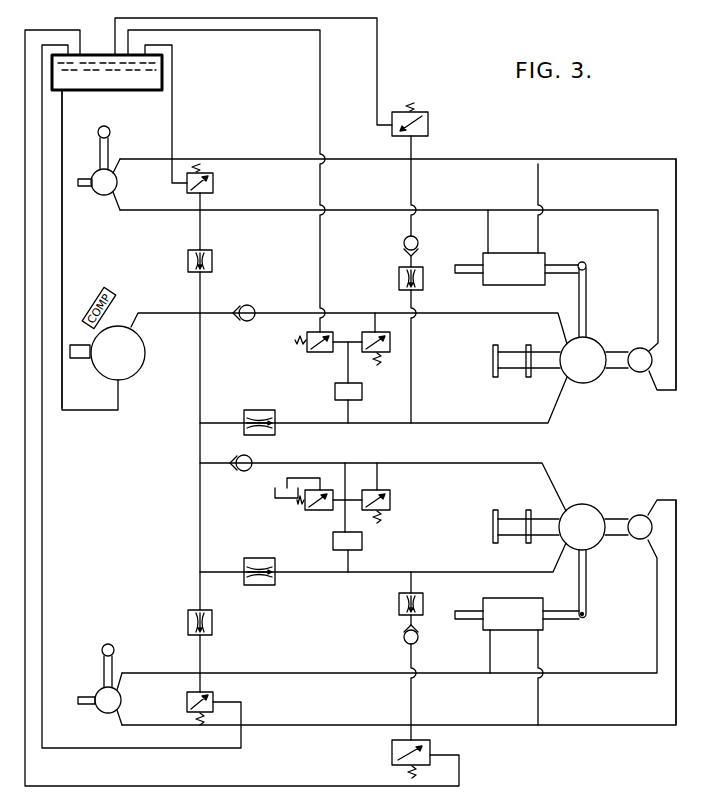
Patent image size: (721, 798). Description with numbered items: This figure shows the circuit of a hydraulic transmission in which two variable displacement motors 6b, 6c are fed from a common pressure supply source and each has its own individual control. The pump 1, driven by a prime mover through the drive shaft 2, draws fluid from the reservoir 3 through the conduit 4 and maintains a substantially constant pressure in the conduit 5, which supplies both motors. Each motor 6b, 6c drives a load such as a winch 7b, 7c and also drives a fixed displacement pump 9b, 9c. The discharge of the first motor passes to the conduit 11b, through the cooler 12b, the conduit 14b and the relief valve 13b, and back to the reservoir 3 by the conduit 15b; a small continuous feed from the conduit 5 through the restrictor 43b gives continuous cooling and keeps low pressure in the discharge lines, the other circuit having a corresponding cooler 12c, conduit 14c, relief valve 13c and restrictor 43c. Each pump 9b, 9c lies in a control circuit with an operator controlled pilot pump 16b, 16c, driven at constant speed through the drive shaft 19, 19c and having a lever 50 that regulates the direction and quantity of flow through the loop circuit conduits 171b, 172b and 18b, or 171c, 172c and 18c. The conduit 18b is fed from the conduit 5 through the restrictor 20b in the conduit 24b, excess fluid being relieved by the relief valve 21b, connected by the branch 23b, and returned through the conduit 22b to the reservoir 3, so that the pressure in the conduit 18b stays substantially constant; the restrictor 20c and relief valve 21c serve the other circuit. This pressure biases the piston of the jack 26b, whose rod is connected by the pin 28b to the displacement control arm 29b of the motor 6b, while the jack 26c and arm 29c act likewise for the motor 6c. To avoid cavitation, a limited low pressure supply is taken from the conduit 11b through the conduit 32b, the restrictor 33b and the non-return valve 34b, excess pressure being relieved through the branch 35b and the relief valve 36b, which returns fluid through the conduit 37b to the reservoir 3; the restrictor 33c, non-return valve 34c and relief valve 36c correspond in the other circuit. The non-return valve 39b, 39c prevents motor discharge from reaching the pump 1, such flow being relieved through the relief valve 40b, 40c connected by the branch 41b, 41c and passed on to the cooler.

The pump 1 is at (137, 369).
The drive shaft 2 is at (82, 360).
The reservoir 3 is at (145, 80).
The conduit 4 is at (62, 281).
The conduit 5 is at (176, 312).
The variable displacement motor 6b is at (588, 384).
The variable displacement motor 6c is at (590, 505).
The winch 7b is at (522, 365).
The winch 7c is at (517, 530).
The pump 9b is at (641, 373).
The pump 9c is at (643, 515).
The conduit 11b is at (557, 415).
The cooler 12b is at (362, 395).
The cooler 12c is at (362, 545).
The relief valve 13b is at (323, 336).
The relief valve 13c is at (325, 498).
The conduit 14b is at (338, 340).
The conduit 14c is at (345, 497).
The conduit 15b is at (318, 127).
The variable flow control device 16b is at (117, 183).
The variable flow control device 16c is at (121, 700).
The loop circuit conduit 171b is at (507, 160).
The loop circuit conduit 172b is at (625, 150).
The loop circuit conduit 171c is at (488, 712).
The loop circuit conduit 172c is at (627, 726).
The conduit 18b is at (633, 200).
The conduit 18c is at (600, 676).
The drive shaft 19 is at (84, 190).
The drive shaft 19c is at (86, 707).
The restrictor 20b is at (213, 267).
The restrictor 20c is at (213, 630).
The relief valve 21b is at (214, 180).
The relief valve 21c is at (214, 696).
The conduit 22b is at (174, 121).
The branch 23b is at (204, 206).
The conduit 24b is at (204, 238).
The jack 26b is at (540, 258).
The jack 26c is at (533, 626).
The pin 28b is at (588, 266).
The displacement control arm 29b is at (588, 318).
The displacement control arm 29c is at (587, 586).
The conduit 32b is at (412, 410).
The restrictor 33b is at (424, 284).
The restrictor 33c is at (399, 604).
The non-return valve 34b is at (418, 240).
The non-return valve 34c is at (404, 638).
The branch 35b is at (413, 156).
The relief valve 36b is at (428, 118).
The relief valve 36c is at (405, 751).
The conduit 37b is at (378, 83).
The non-return valve 39b is at (256, 307).
The non-return valve 39c is at (244, 472).
The relief valve 40b is at (391, 345).
The relief valve 40c is at (391, 501).
The branch 41b is at (375, 328).
The branch 41c is at (380, 478).
The restrictor 43b is at (276, 435).
The restrictor 43c is at (276, 586).
The lever 50 is at (98, 129).